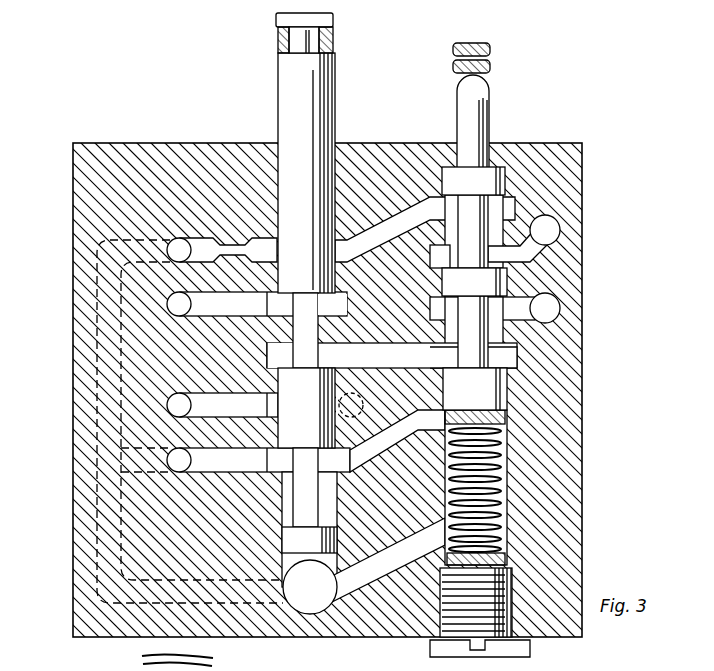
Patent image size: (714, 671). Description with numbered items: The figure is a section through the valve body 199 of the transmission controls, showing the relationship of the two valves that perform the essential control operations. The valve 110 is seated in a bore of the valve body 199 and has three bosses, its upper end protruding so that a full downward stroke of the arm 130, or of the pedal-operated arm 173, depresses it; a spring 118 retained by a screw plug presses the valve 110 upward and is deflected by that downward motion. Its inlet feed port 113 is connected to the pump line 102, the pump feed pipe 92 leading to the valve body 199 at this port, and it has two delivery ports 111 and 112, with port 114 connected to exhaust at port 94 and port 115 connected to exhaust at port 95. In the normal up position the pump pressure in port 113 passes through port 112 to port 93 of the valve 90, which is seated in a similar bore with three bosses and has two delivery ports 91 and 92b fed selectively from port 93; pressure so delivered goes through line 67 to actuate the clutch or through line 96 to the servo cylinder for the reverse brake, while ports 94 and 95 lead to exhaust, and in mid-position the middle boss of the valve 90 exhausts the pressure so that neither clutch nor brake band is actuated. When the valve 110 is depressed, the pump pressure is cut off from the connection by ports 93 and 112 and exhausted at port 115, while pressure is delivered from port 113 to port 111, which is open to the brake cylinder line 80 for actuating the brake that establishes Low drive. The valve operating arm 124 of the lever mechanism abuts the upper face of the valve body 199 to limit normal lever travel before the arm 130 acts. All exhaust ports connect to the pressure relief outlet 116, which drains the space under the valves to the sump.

The valve body 199 is at (103, 157).
The valve 90 is at (278, 90).
The valve operating arm 124 is at (330, 47).
The arm 130 is at (480, 49).
The arm 173 is at (492, 67).
The valve 110 is at (490, 112).
The exhaust port 94 is at (340, 247).
The delivery port 91 is at (332, 300).
The port 93 is at (278, 353).
The delivery port 92b is at (340, 405).
The pump line 102 is at (373, 385).
The exhaust port 95 is at (332, 458).
The port 114 is at (283, 593).
The pressure relief outlet 116 is at (306, 608).
The line 67 is at (165, 304).
The line 96 is at (168, 405).
The brake cylinder line 80 is at (560, 230).
The delivery port 111 is at (530, 247).
The feed pipe 92 is at (560, 314).
The inlet feed port 113 is at (513, 317).
The delivery port 112 is at (515, 363).
The port 115 is at (510, 410).
The spring 118 is at (497, 467).